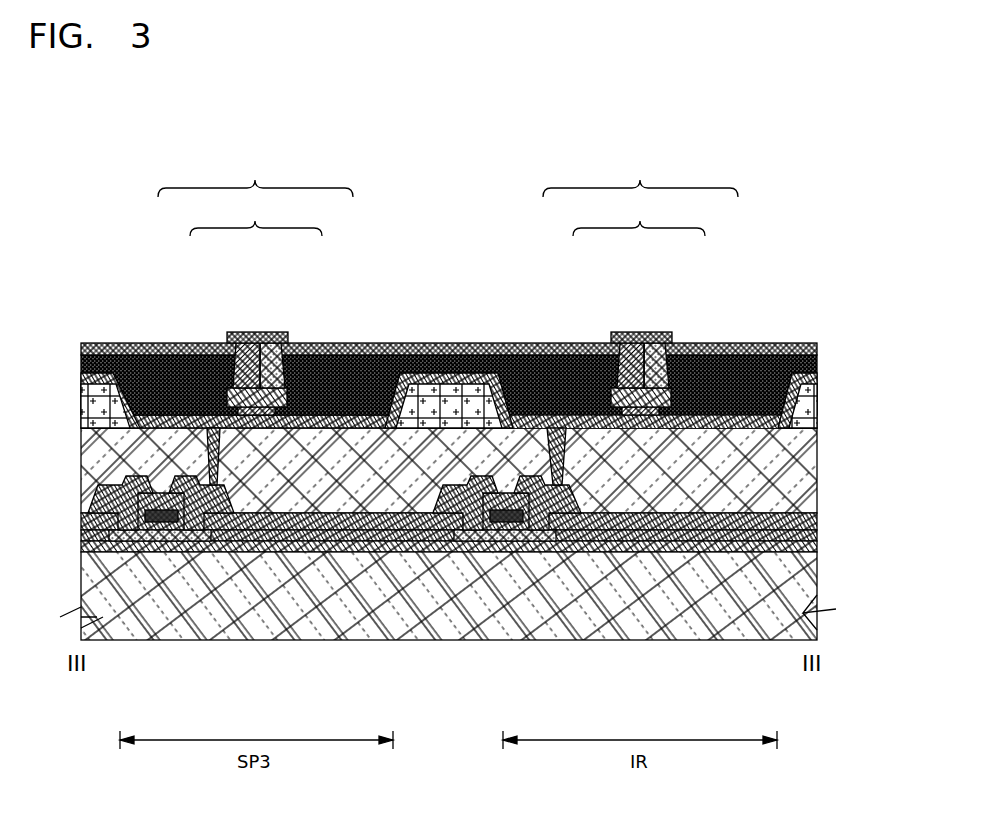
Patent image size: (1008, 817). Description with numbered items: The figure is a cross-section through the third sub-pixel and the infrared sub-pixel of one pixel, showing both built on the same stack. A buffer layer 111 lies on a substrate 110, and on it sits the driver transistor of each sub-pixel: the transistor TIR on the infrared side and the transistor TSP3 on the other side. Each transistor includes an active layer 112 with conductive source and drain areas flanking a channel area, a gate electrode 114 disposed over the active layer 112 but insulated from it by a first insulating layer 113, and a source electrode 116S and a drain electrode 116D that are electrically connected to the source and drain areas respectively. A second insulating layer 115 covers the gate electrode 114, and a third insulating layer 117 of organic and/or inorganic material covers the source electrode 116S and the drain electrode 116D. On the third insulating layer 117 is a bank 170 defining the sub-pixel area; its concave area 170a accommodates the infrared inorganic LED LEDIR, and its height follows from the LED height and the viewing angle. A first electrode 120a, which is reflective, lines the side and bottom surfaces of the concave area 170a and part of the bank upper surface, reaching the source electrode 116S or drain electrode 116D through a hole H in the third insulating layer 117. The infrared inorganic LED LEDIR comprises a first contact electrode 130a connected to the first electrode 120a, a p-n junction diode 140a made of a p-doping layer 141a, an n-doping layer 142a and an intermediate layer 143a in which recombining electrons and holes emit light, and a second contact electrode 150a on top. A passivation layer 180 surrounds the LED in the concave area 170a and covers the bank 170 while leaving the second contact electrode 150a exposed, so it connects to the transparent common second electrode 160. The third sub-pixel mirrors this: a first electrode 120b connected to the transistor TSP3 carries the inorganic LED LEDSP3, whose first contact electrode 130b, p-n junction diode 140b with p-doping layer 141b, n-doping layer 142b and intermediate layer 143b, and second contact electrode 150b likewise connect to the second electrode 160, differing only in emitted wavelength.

The substrate 110 is at (808, 594).
The buffer layer 111 is at (810, 547).
The active layer 112 is at (533, 542).
The first insulating layer 113 is at (810, 537).
The gate electrode 114 is at (500, 525).
The second insulating layer 115 is at (810, 522).
The source electrode 116S is at (447, 520).
The drain electrode 116D is at (578, 515).
The third insulating layer 117 is at (810, 470).
The first electrode 120a is at (741, 415).
The first electrode 120b is at (357, 415).
The first contact electrode 130a is at (674, 410).
The first contact electrode 130b is at (290, 410).
The p-n junction diode 140a is at (640, 302).
The p-n junction diode 140b is at (255, 302).
The p-doping layer 141a is at (679, 377).
The p-doping layer 141b is at (295, 377).
The n-doping layer 142a is at (631, 343).
The n-doping layer 142b is at (247, 343).
The intermediate layer 143a is at (641, 345).
The intermediate layer 143b is at (257, 345).
The second contact electrode 150a is at (611, 341).
The second contact electrode 150b is at (226, 341).
The second electrode 160 is at (817, 349).
The bank 170 is at (810, 407).
The concave area 170a is at (783, 373).
The passivation layer 180 is at (813, 371).
The hole H is at (553, 430).
The transistor TSP3 is at (243, 545).
The transistor TIR is at (543, 480).
The inorganic LED LEDSP3 is at (258, 285).
The infrared inorganic LED LEDIR is at (641, 285).